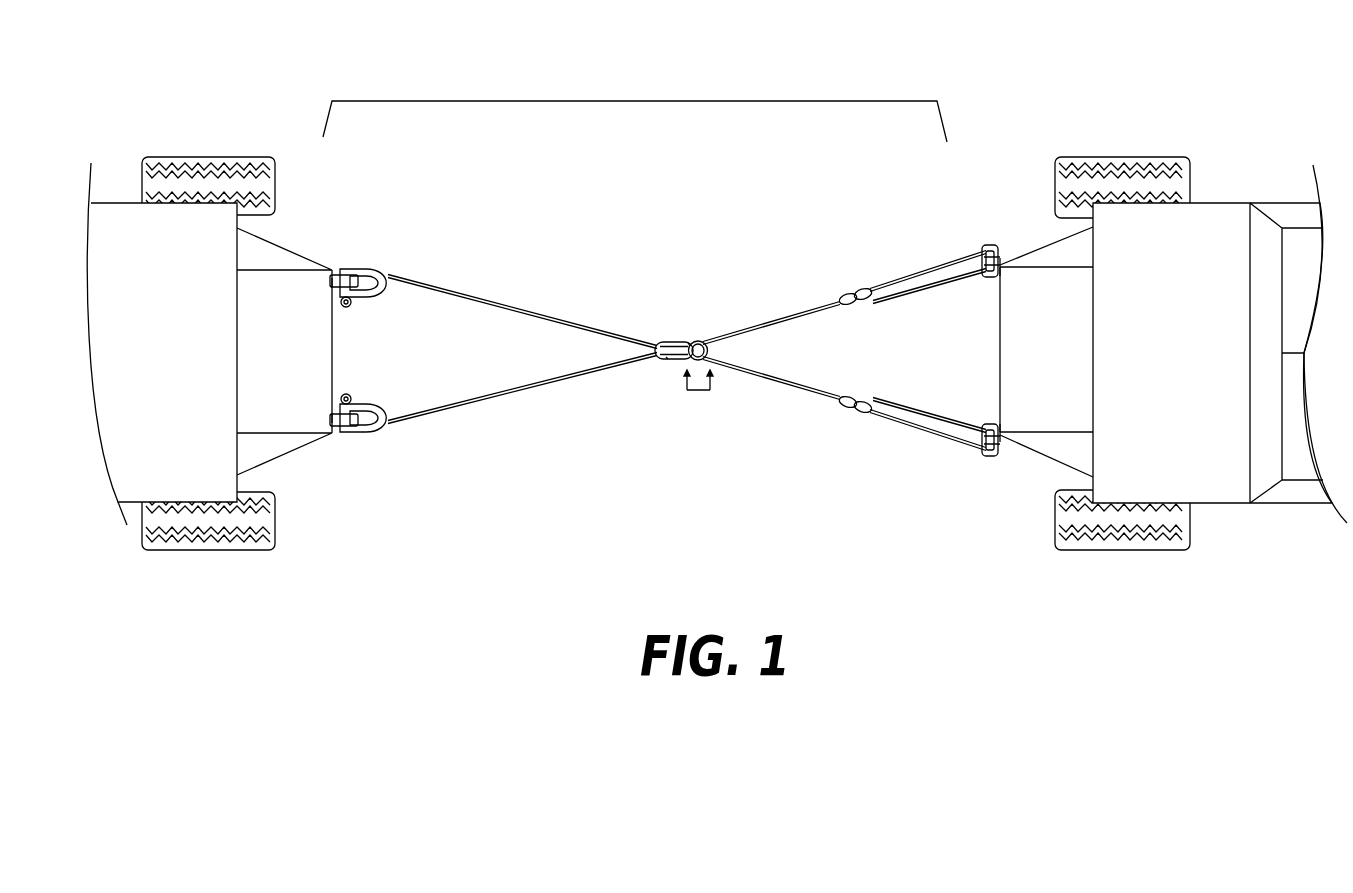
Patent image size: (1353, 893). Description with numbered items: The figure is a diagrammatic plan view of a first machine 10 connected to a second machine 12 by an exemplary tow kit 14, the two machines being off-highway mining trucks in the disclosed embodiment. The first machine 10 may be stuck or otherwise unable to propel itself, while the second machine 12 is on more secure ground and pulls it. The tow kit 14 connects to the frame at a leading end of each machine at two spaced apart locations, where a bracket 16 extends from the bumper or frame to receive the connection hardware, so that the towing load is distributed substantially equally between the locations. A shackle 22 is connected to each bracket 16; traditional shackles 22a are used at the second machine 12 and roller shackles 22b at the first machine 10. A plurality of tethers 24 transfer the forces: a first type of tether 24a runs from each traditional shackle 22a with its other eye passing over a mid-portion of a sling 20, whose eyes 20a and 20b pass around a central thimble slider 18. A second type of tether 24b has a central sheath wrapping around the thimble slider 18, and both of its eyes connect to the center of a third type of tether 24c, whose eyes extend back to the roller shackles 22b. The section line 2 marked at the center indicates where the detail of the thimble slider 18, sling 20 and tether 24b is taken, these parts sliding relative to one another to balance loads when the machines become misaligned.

The first machine 10 is at (1188, 362).
The second machine 12 is at (169, 361).
The tow kit 14 is at (677, 101).
The bracket 16 is at (334, 283).
The thimble slider 18 is at (710, 347).
The sling 20 is at (673, 345).
The eye of sling 20a is at (688, 346).
The eye of sling 20b is at (667, 360).
The shackle 22 is at (665, 355).
The traditional shackle 22a is at (372, 268).
The roller shackle 22b is at (989, 244).
The tethers 24 is at (687, 369).
The first type of tether 24a is at (487, 302).
The second type of tether 24b is at (770, 323).
The third type of tether 24c is at (920, 273).
The section line 2- 2 is at (699, 384).